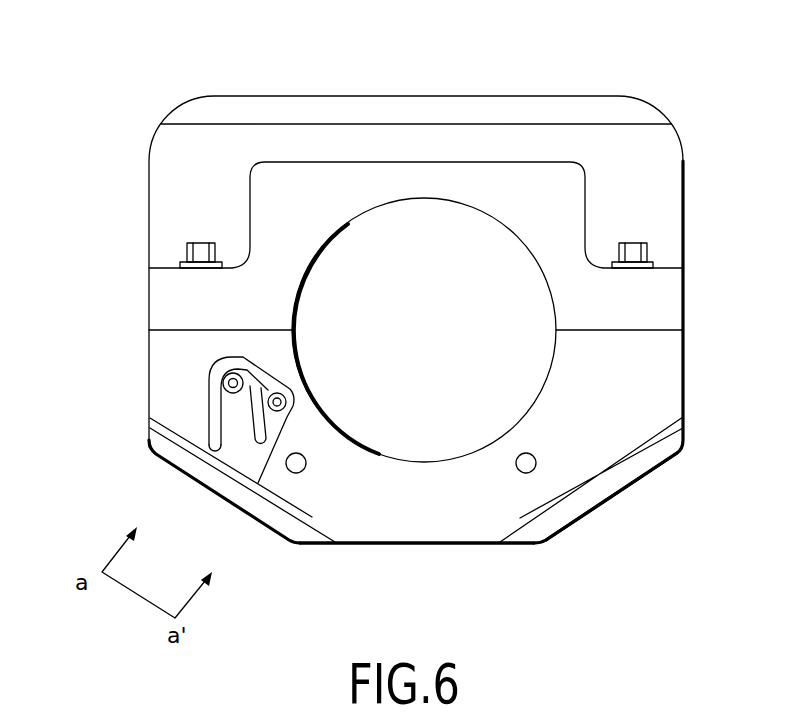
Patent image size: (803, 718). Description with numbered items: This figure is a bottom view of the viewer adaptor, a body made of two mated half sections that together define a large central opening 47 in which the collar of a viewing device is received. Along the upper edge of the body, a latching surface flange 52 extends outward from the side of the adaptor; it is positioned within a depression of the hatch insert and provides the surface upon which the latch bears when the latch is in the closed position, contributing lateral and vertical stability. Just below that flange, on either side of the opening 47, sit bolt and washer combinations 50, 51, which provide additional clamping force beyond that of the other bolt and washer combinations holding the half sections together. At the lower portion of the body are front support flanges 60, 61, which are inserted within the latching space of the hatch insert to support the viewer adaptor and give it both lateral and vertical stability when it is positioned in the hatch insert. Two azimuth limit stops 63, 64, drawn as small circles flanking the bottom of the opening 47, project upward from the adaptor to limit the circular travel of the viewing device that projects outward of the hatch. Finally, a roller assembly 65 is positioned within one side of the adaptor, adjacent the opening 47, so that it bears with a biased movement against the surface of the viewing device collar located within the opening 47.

The opening 47 is at (446, 345).
The bolt and washer combination 50 is at (188, 251).
The bolt and washer combination 51 is at (637, 242).
The latching surface flange 52 is at (390, 118).
The front support flange 60 is at (305, 535).
The front support flange 61 is at (590, 497).
The azimuth limit stop 63 is at (304, 470).
The azimuth limit stop 64 is at (531, 459).
The roller assembly 65 is at (237, 421).